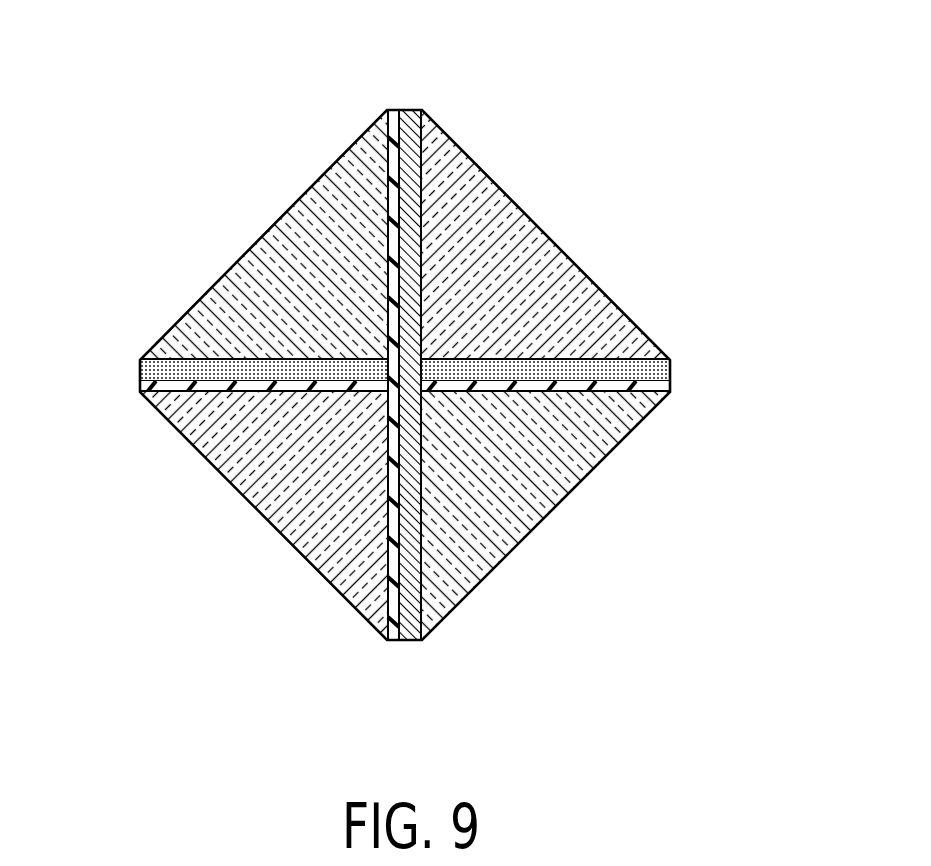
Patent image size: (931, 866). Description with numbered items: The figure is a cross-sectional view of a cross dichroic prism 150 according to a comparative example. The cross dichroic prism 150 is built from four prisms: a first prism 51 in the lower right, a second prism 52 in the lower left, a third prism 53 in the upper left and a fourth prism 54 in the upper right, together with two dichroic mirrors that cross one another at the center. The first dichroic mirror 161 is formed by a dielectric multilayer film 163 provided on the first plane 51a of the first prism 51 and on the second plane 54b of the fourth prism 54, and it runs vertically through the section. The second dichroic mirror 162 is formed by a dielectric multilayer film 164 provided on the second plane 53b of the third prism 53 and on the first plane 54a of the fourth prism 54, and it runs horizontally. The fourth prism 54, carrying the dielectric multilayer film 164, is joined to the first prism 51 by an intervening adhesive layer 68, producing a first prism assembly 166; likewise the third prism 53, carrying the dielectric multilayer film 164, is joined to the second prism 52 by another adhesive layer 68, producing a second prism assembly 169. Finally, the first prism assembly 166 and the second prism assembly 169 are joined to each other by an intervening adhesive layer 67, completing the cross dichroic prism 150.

The cross dichroic prism 150 is at (380, 93).
The second prism assembly 169 is at (314, 157).
The first prism assembly 166 is at (521, 172).
The second dichroic mirror 162 is at (249, 343).
The first dichroic mirror 161 is at (436, 309).
The dielectric multilayer film 163 is at (412, 641).
The dielectric multilayer film 164 is at (138, 368).
The adhesive layer 67 is at (391, 641).
The adhesive layer 68 is at (137, 387).
The first prism 51 is at (523, 517).
The second prism 52 is at (300, 531).
The third prism 53 is at (289, 225).
The fourth prism 54 is at (540, 258).
The first plane 51a is at (415, 618).
The second plane 53b is at (153, 367).
The first plane 54a is at (658, 368).
The second plane 54b is at (420, 160).